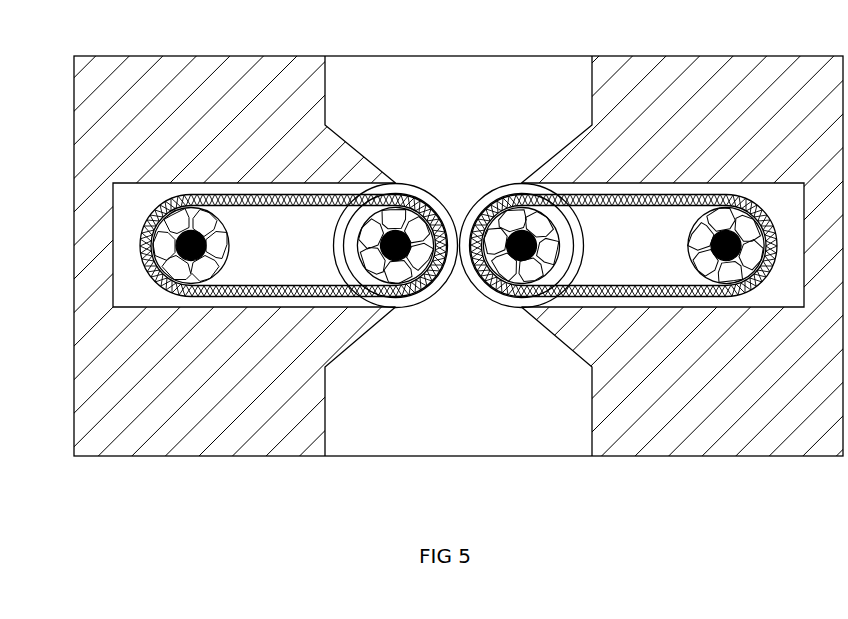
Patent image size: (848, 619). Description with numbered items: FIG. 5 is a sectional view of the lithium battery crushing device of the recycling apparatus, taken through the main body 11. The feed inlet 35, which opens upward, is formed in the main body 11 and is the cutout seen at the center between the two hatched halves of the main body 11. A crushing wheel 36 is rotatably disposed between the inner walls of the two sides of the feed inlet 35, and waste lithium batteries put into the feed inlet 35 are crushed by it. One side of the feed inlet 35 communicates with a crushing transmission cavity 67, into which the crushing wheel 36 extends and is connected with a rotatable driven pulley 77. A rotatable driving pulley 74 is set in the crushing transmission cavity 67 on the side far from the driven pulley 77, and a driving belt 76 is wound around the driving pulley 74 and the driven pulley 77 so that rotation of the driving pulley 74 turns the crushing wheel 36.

The main body 11 is at (194, 87).
The feed inlet 35 is at (458, 92).
The crushing wheel 36 is at (415, 193).
The crushing transmission cavity 67 is at (128, 202).
The driving pulley 74 is at (162, 242).
The driving belt 76 is at (238, 196).
The driven pulley 77 is at (401, 220).